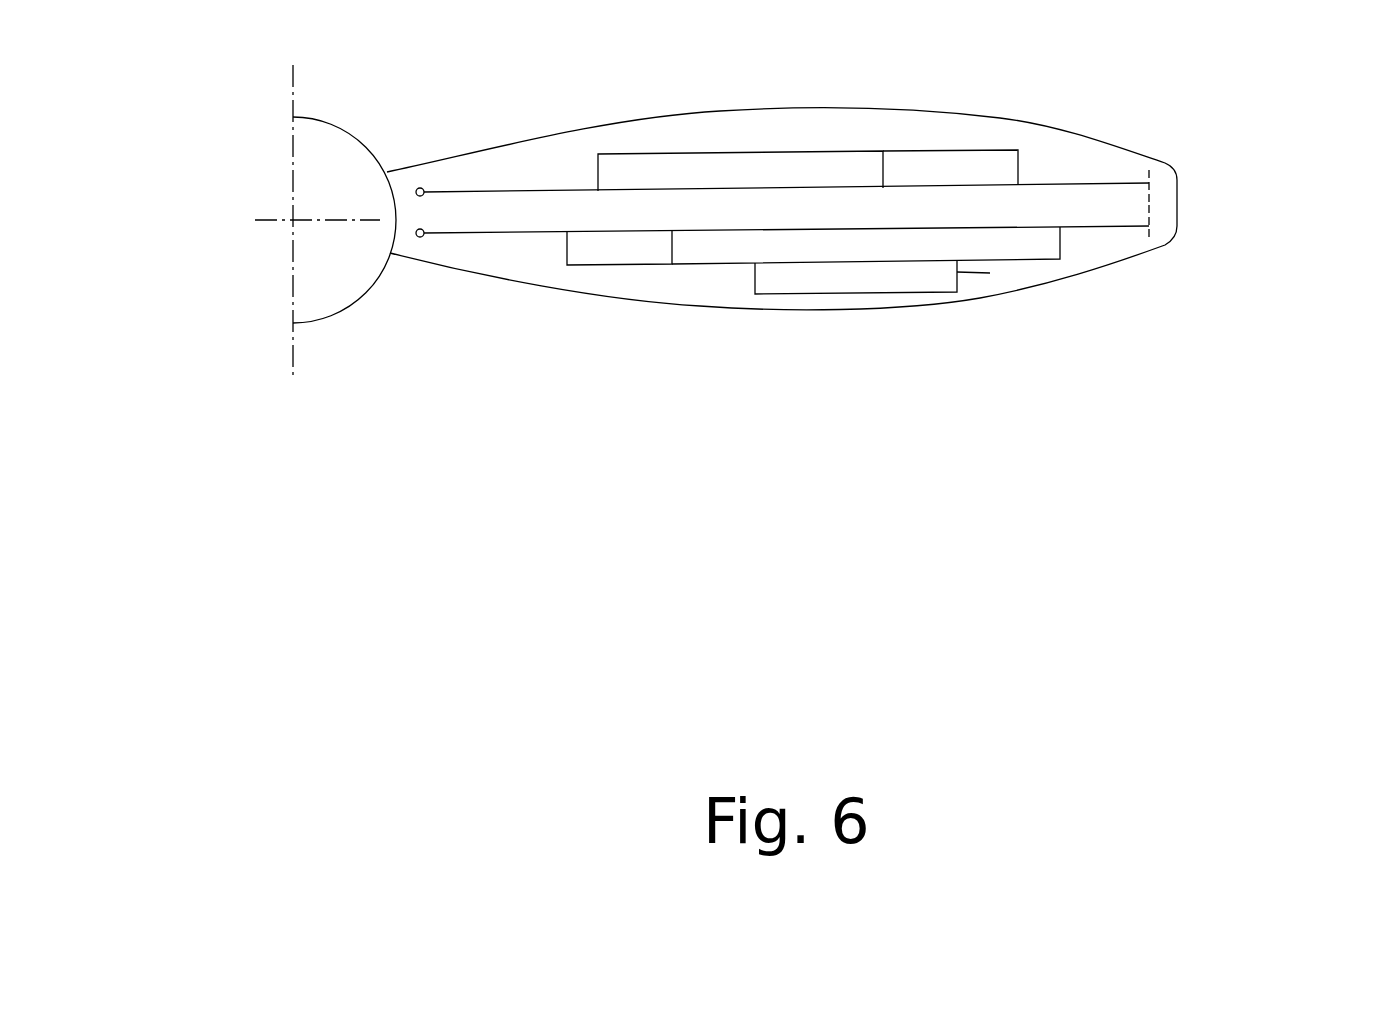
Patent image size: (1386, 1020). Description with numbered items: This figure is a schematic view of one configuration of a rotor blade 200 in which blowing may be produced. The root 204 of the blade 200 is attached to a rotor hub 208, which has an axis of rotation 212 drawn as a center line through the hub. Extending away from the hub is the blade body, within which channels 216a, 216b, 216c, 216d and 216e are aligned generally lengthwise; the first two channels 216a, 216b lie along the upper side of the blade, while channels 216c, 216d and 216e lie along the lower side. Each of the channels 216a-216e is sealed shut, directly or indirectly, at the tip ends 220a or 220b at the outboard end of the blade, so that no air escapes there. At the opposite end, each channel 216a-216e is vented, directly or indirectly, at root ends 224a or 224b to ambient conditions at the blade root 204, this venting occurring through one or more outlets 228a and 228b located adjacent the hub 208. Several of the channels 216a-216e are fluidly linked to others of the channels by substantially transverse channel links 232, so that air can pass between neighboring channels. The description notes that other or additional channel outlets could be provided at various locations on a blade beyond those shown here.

The rotor blade 200 is at (1120, 388).
The root 204 is at (418, 252).
The rotor hub 208 is at (340, 127).
The axis of rotation 212 is at (293, 217).
The channel 216a is at (748, 153).
The channel 216b is at (883, 187).
The channel 216c is at (672, 264).
The channel 216d is at (718, 263).
The channel 216e is at (918, 293).
The tip end 220a is at (1148, 183).
The tip end 220b is at (1148, 226).
The root end 224a is at (435, 189).
The root end 224b is at (426, 236).
The outlet 228a is at (423, 189).
The outlet 228b is at (424, 236).
The channel link 232 is at (990, 273).